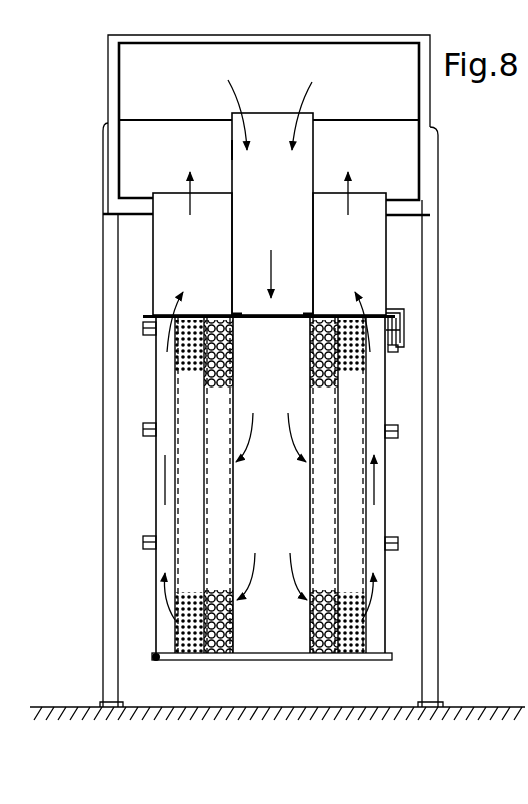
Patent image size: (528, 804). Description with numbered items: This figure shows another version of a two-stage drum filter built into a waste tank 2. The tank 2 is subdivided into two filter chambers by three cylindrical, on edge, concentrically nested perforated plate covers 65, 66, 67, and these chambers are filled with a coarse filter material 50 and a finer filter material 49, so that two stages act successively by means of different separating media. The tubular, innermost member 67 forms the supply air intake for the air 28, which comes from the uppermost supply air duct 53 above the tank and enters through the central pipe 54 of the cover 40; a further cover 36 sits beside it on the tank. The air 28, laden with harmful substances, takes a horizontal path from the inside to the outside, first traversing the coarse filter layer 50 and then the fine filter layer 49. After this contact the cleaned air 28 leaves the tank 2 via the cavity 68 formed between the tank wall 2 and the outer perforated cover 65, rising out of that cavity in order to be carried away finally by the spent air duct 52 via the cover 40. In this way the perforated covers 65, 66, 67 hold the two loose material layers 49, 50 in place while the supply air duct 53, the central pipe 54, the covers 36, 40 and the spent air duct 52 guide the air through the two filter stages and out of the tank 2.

The waste tank 2 is at (398, 432).
The supply air 28 is at (303, 252).
The cover 36 is at (378, 275).
The cover 40 is at (155, 252).
The finer filter material 49 is at (350, 605).
The coarse filter material 50 is at (316, 560).
The spent air duct 52 is at (405, 159).
The uppermost supply air duct 53 is at (133, 82).
The central pipe 54 is at (232, 147).
The perforated plate cover 65 is at (165, 402).
The perforated plate cover 66 is at (175, 478).
The perforated plate cover 67 is at (232, 537).
The cavity 68 is at (163, 372).